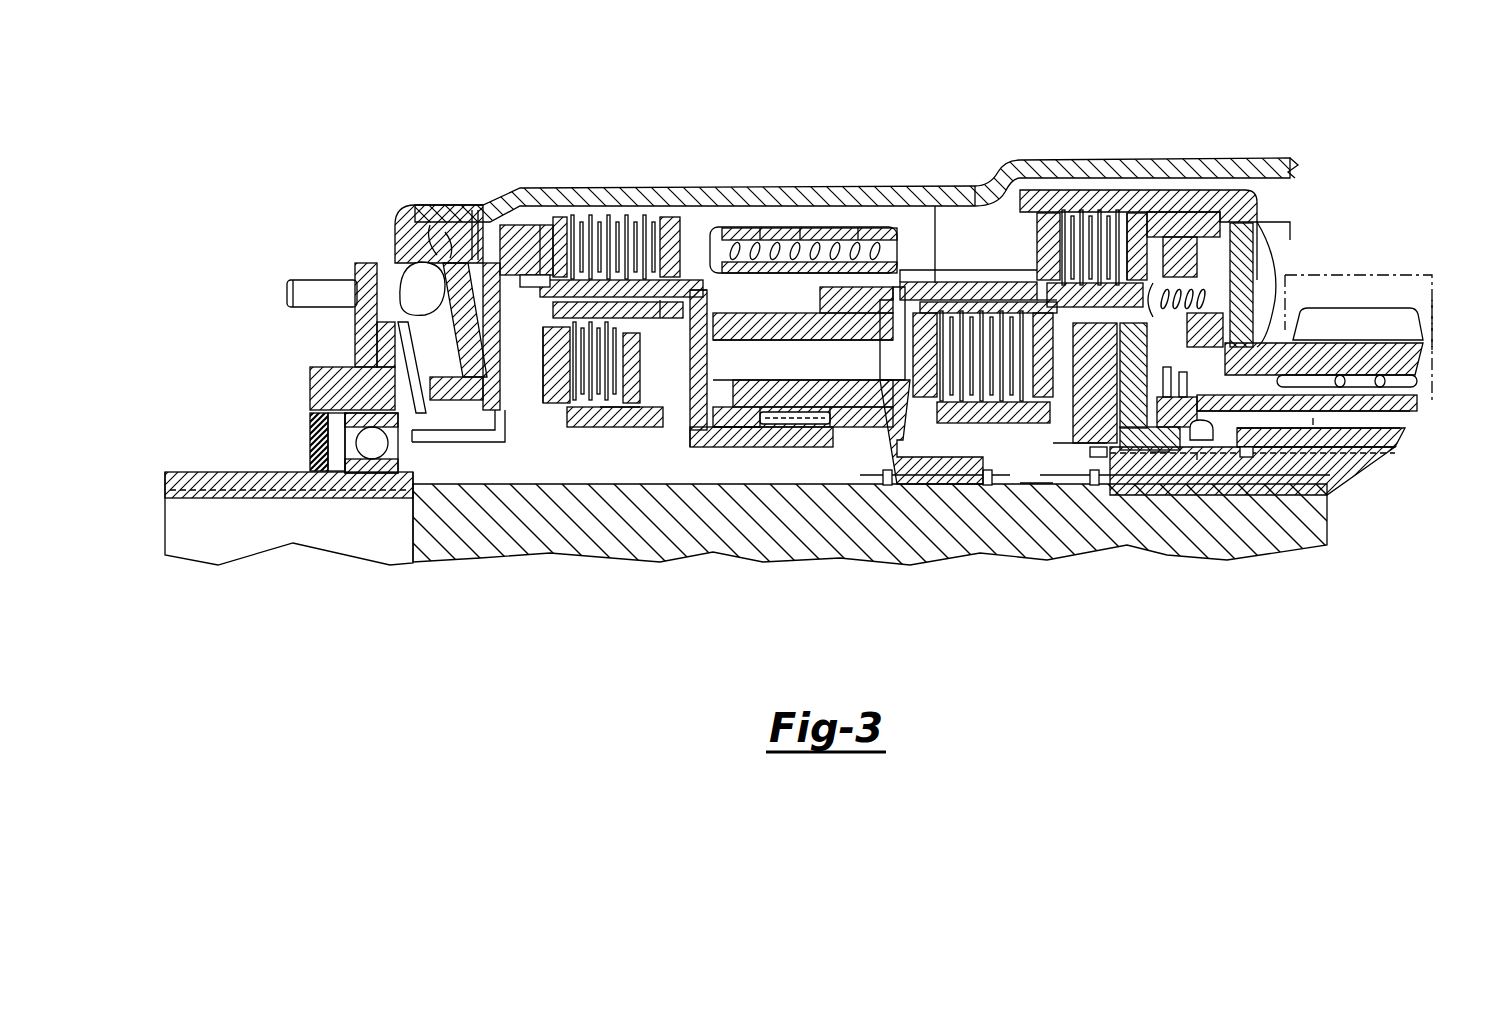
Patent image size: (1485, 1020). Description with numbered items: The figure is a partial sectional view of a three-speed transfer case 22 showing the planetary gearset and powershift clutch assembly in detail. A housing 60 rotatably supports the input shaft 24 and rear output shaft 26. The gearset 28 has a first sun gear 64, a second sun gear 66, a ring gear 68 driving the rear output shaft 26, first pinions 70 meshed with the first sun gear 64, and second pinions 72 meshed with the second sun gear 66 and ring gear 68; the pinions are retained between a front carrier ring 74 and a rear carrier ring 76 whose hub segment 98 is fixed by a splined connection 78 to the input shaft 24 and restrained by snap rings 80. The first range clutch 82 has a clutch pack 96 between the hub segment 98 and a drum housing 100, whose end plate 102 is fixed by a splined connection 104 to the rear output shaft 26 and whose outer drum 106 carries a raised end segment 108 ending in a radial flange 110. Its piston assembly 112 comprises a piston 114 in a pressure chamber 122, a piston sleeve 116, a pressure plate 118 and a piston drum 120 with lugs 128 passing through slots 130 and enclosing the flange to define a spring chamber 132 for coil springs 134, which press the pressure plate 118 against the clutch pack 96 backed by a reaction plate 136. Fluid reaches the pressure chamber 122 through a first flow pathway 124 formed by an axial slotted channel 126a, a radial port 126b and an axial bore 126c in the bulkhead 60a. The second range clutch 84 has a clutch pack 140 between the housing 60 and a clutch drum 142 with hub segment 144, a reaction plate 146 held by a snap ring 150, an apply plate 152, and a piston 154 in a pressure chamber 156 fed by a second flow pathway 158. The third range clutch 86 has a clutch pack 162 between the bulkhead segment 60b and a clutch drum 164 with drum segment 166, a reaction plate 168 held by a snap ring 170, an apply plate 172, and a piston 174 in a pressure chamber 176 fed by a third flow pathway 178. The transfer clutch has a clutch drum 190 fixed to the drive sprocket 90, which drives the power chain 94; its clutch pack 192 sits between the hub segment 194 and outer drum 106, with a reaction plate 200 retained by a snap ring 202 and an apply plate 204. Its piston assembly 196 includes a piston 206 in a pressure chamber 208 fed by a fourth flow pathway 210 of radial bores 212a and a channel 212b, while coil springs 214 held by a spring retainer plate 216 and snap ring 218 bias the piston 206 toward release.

The transfer case 22 is at (1218, 108).
The input shaft 24 is at (445, 545).
The rear output shaft 26 is at (1328, 425).
The gearset 28 is at (718, 228).
The housing 60 is at (918, 187).
The bulkhead 60a is at (1430, 400).
The bulkhead segment 60b is at (520, 428).
The first sun gear 64 is at (710, 447).
The second sun gear 66 is at (826, 480).
The ring gear 68 is at (820, 313).
The first pinions 70 is at (777, 398).
The second pinions 72 is at (813, 430).
The front carrier ring 74 is at (727, 398).
The rear carrier ring 76 is at (897, 297).
The splined connection 78 is at (928, 490).
The snap rings 80 is at (888, 487).
The first range clutch 82 is at (984, 205).
The second range clutch 84 is at (617, 212).
The third range clutch 86 is at (595, 427).
The drive sprocket 90 is at (1380, 310).
The power chain 94 is at (1430, 296).
The clutch pack 96 is at (1030, 465).
The hub segment 98 is at (990, 398).
The drum housing 100 is at (993, 287).
The end plate 102 is at (1160, 458).
The splined connection 104 is at (1152, 458).
The outer drum 106 is at (962, 270).
The raised end segment 108 is at (780, 230).
The radial flange 110 is at (703, 237).
The piston assembly 112 is at (1020, 483).
The piston 114 is at (1058, 452).
The piston sleeve 116 is at (1025, 290).
The pressure plate 118 is at (947, 390).
The piston drum 120 is at (738, 228).
The pressure chamber 122 is at (1150, 398).
The first flow pathway 124 is at (1372, 418).
The axial slotted channel 126a is at (1197, 460).
The radial port 126b is at (1203, 447).
The axial bore 126c is at (1313, 420).
The lugs 128 is at (887, 293).
The slots 130 is at (935, 205).
The spring chamber 132 is at (800, 240).
The coil springs 134 is at (858, 250).
The reaction plate 136 is at (1072, 315).
The clutch pack 140 is at (577, 233).
The clutch drum 142 is at (795, 353).
The hub segment 144 is at (643, 287).
The reaction plate 146 is at (648, 290).
The snap ring 150 is at (724, 295).
The apply plate 152 is at (545, 215).
The piston 154 is at (450, 245).
The pressure chamber 156 is at (437, 255).
The second flow pathway 158 is at (410, 280).
The clutch pack 162 is at (592, 382).
The clutch drum 164 is at (673, 430).
The drum segment 166 is at (543, 280).
The reaction plate 168 is at (640, 367).
The snap ring 170 is at (612, 420).
The apply plate 172 is at (545, 405).
The piston 174 is at (480, 225).
The pressure chamber 176 is at (540, 385).
The third flow pathway 178 is at (403, 347).
The clutch drum 190 is at (1237, 345).
The clutch pack 192 is at (1128, 222).
The hub segment 194 is at (1230, 235).
The piston assembly 196 is at (1262, 230).
The reaction plate 200 is at (1090, 270).
The snap ring 202 is at (1050, 240).
The apply plate 204 is at (1150, 230).
The piston 206 is at (1260, 235).
The pressure chamber 208 is at (1240, 300).
The fourth flow pathway 210 is at (1280, 312).
The radial bores 212a is at (1232, 367).
The channel 212b is at (1290, 355).
The coil springs 214 is at (1182, 232).
The spring retainer plate 216 is at (1137, 207).
The snap ring 218 is at (1160, 283).